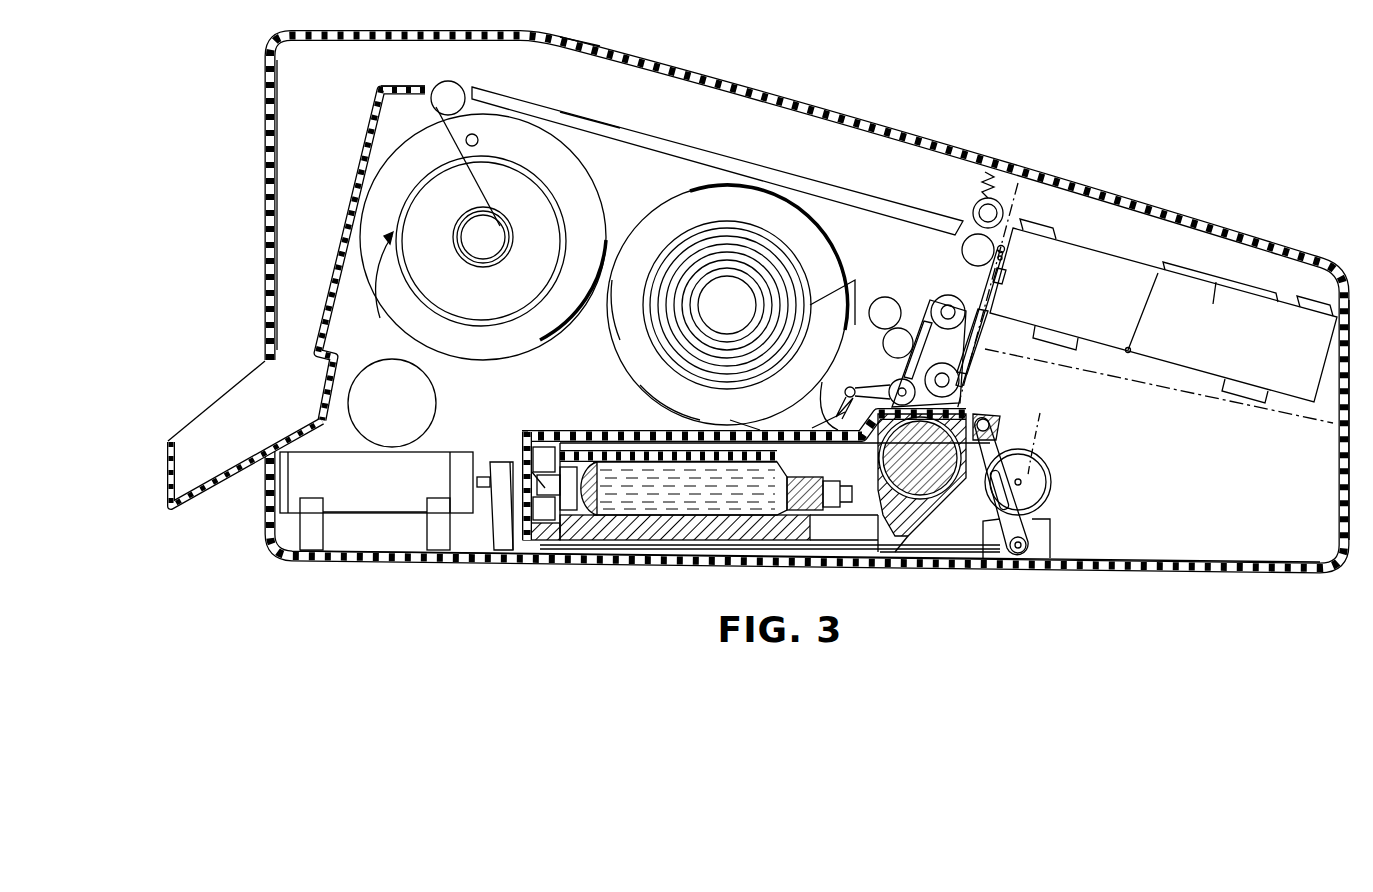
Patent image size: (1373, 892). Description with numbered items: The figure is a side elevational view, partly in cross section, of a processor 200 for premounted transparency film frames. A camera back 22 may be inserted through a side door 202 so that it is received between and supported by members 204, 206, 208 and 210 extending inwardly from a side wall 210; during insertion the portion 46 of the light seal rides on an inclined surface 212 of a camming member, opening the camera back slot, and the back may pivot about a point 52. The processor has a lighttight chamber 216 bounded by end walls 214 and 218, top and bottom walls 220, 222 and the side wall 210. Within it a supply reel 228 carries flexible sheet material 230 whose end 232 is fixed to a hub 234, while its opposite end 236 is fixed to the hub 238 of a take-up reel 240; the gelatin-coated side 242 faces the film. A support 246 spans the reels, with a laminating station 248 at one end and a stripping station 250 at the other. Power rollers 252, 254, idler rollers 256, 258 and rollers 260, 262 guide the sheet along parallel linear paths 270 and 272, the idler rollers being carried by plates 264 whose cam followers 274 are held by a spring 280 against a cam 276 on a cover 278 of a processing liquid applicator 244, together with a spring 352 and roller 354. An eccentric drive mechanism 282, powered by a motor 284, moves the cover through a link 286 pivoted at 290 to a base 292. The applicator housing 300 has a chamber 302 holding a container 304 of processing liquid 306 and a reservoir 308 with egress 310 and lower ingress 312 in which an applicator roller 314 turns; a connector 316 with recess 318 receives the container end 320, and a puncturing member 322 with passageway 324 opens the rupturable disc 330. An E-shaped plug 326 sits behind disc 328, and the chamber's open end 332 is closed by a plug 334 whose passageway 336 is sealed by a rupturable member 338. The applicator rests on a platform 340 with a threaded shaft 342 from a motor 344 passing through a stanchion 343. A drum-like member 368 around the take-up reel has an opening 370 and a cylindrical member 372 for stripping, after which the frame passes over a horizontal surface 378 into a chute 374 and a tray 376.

The film processor 200 is at (958, 135).
The cartridge 22 is at (1221, 262).
The portion of the light seal 46 is at (1005, 250).
The cartridge pivot 52 is at (1128, 354).
The side door 202 is at (1210, 398).
The support member 204 is at (1050, 346).
The support member 206 is at (1245, 400).
The support member 208 is at (1040, 228).
The side wall 210 is at (1312, 294).
The inclined surface 212 is at (1003, 278).
The end wall 214 is at (1350, 290).
The lighttight chamber 216 is at (752, 147).
The end wall 218 is at (265, 158).
The top wall 220 is at (606, 48).
The bottom wall 222 is at (640, 568).
The supply reel 228 is at (612, 380).
The flexible sheet material 230 is at (800, 270).
The end of sheet material 232 is at (660, 318).
The hub of supply reel 234 is at (712, 317).
The opposite end of sheet material 236 is at (474, 256).
The hub of take-up reel 238 is at (478, 228).
The take-up reel 240 is at (588, 183).
The coated side 242 is at (820, 330).
The processing liquid applicator 244 is at (773, 553).
The support 246 is at (700, 170).
The laminating station 248 is at (962, 210).
The stripping station 250 is at (509, 92).
The power roller 252 is at (884, 297).
The power roller 254 is at (884, 343).
The idler roller 256 is at (960, 296).
The idler roller 258 is at (960, 378).
The roller 260 is at (962, 252).
The roller 262 is at (455, 88).
The plate 264 is at (975, 412).
The linear path 270 is at (922, 304).
The linear path 272 is at (994, 330).
The cam follower 274 is at (897, 383).
The cam 276 is at (818, 396).
The cover 278 is at (810, 426).
The spring 280 is at (848, 387).
The eccentric drive mechanism 282 is at (1066, 478).
The motor 284 is at (438, 398).
The link 286 is at (1060, 452).
The pivotal coupling 290 is at (1055, 522).
The base 292 is at (1060, 548).
The housing 300 is at (590, 430).
The chamber 302 is at (652, 430).
The container 304 is at (628, 540).
The processing liquid 306 is at (705, 500).
The reservoir 308 is at (932, 505).
The egress 310 is at (838, 458).
The ingress 312 is at (912, 542).
The applicator roller 314 is at (950, 484).
The connector 316 is at (850, 512).
The recess 318 is at (822, 514).
The end of container 320 is at (800, 542).
The puncturing member 322 is at (905, 548).
The passageway 324 is at (922, 564).
The E-shaped plug 326 is at (580, 508).
The rupturable disc 328 is at (533, 436).
The rupturable disc 330 is at (755, 428).
The open end of chamber 332 is at (556, 500).
The plug 334 is at (528, 455).
The passageway 336 is at (532, 500).
The rupturable member 338 is at (522, 470).
The platform 340 is at (736, 556).
The threaded shaft 342 is at (478, 480).
The stanchion 343 is at (500, 545).
The motor 344 is at (343, 483).
The spring 352 is at (984, 192).
The tension roller 354 is at (973, 216).
The drum-like member 368 is at (546, 330).
The opening 370 is at (382, 242).
The cylindrically shaped member 372 is at (479, 139).
The chute 374 is at (352, 126).
The tray 376 is at (225, 440).
The horizontal surface 378 is at (425, 83).